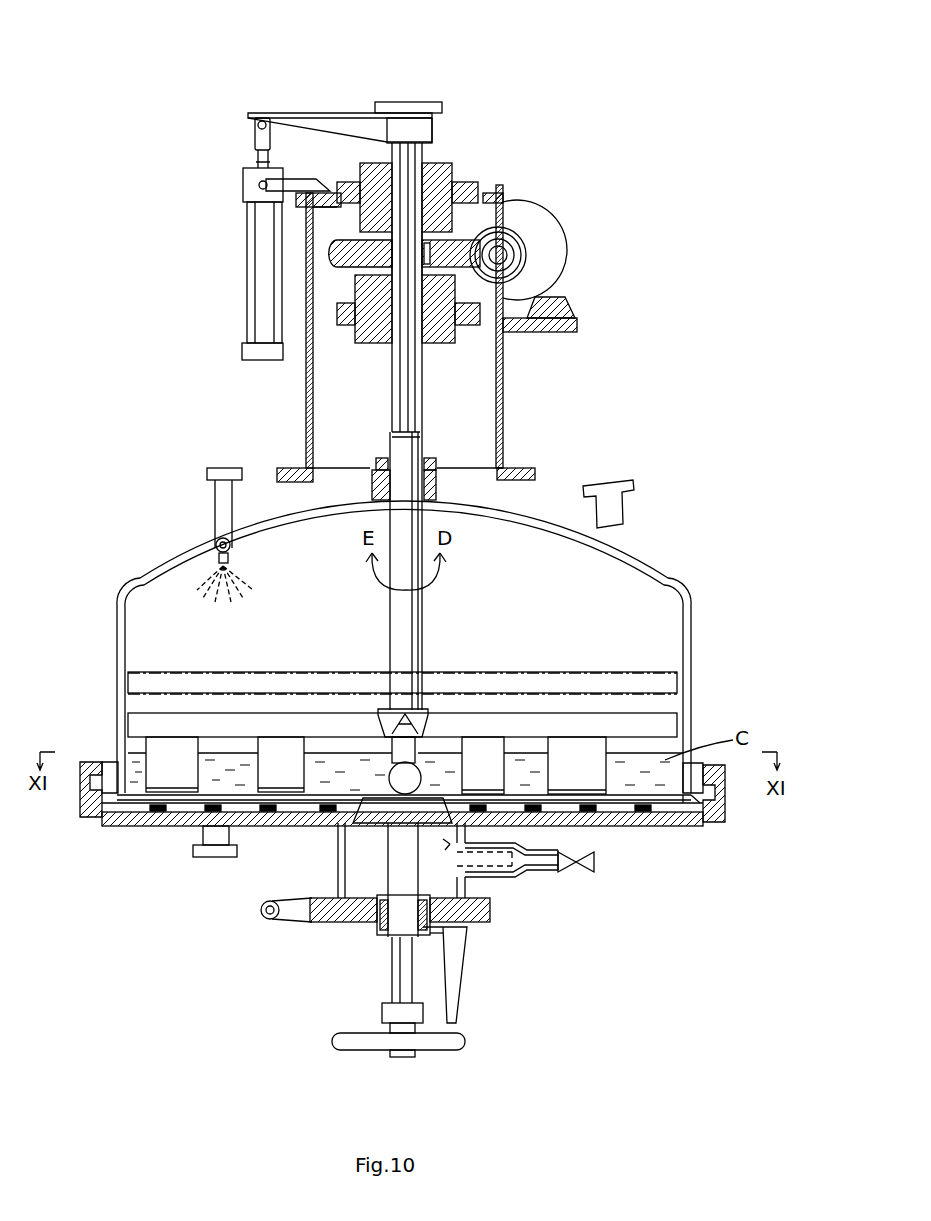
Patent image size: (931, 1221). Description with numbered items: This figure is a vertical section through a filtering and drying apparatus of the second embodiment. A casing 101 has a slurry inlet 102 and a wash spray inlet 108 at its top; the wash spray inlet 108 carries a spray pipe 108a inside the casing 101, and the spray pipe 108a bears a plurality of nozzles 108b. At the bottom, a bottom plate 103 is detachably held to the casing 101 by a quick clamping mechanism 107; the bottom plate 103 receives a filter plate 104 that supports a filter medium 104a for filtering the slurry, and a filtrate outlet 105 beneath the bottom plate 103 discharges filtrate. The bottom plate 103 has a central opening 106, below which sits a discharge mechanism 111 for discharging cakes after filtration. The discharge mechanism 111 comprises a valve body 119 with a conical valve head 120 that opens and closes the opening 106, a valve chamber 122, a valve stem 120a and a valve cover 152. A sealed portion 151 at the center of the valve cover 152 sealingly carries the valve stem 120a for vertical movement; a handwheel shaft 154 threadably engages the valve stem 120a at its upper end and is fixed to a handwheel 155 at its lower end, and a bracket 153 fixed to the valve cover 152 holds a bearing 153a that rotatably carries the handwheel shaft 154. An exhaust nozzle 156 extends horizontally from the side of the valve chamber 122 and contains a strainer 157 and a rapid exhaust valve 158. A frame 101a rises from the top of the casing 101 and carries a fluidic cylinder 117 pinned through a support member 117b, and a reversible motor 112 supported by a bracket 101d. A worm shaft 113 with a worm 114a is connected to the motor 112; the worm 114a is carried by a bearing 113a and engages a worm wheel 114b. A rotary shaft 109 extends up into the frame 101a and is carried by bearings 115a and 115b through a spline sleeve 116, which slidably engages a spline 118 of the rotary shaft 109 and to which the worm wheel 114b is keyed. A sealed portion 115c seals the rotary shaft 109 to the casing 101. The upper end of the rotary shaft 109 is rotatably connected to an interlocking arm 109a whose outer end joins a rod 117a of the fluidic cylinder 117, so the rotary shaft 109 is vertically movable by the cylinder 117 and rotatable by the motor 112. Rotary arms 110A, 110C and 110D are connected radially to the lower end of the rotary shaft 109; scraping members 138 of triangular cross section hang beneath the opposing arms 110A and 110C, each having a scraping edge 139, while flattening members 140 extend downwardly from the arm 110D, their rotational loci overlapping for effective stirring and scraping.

The casing 101 is at (691, 578).
The frame 101a is at (503, 430).
The bracket 101d is at (560, 326).
The slurry inlet 102 is at (635, 493).
The bottom plate 103 is at (700, 825).
The filter plate 104 is at (622, 826).
The filter medium 104a is at (695, 828).
The filtrate outlet 105 is at (215, 848).
The opening 106 is at (345, 845).
The quick clamping mechanism 107 is at (85, 805).
The wash spray inlet 108 is at (222, 468).
The spray pipe 108a is at (218, 544).
The nozzles 108b is at (220, 562).
The rotary shaft 109 is at (420, 605).
The interlocking arm 109a is at (320, 125).
The rotary arm 110A is at (128, 673).
The rotary arm 110C is at (677, 680).
The rotary arm 110D is at (425, 722).
The discharge mechanism 111 is at (462, 940).
The reversible motor 112 is at (565, 258).
The worm shaft 113 is at (522, 276).
The bearing 113a is at (505, 243).
The worm 114a is at (514, 249).
The worm wheel 114b is at (478, 240).
The bearing 115a is at (445, 170).
The bearing 115b is at (455, 332).
The sealed portion 115c is at (437, 475).
The spline sleeve 116 is at (430, 343).
The fluidic cylinder 117 is at (247, 325).
The rod 117a is at (258, 152).
The support member 117b is at (248, 195).
The spline 118 is at (393, 395).
The valve body 119 is at (274, 919).
The conical valve head 120 is at (395, 865).
The valve stem 120a is at (332, 915).
The valve chamber 122 is at (486, 925).
The scraping members 138 is at (185, 740).
The scraping edge 139 is at (152, 796).
The flattening members 140 is at (392, 760).
The sealed portion 151 is at (392, 960).
The valve cover 152 is at (382, 932).
The bracket 153 is at (450, 1010).
The bearing 153a is at (460, 1045).
The handwheel shaft 154 is at (412, 975).
The handwheel 155 is at (355, 1045).
The exhaust nozzle 156 is at (548, 872).
The strainer 157 is at (512, 878).
The rapid exhaust valve 158 is at (582, 862).